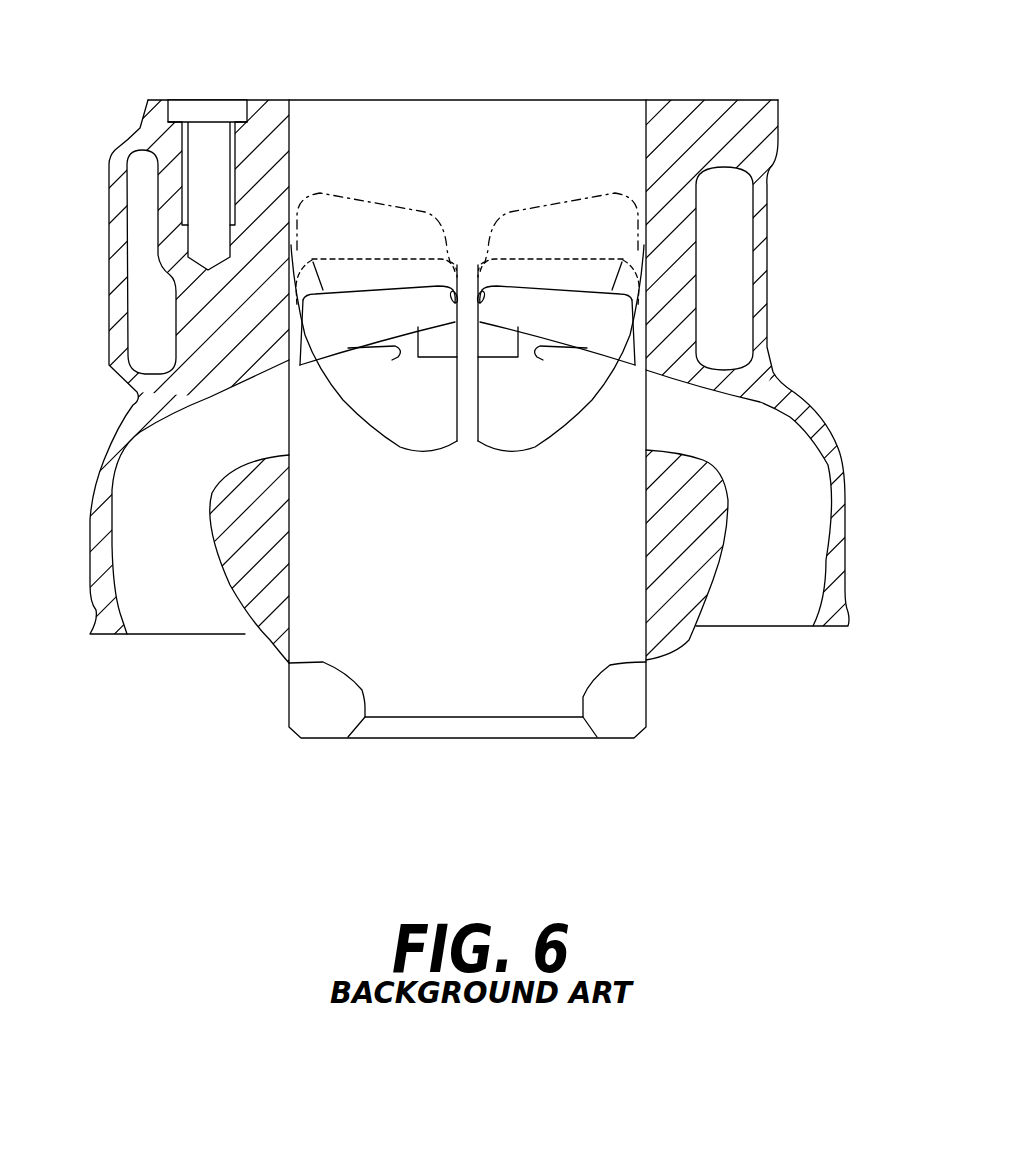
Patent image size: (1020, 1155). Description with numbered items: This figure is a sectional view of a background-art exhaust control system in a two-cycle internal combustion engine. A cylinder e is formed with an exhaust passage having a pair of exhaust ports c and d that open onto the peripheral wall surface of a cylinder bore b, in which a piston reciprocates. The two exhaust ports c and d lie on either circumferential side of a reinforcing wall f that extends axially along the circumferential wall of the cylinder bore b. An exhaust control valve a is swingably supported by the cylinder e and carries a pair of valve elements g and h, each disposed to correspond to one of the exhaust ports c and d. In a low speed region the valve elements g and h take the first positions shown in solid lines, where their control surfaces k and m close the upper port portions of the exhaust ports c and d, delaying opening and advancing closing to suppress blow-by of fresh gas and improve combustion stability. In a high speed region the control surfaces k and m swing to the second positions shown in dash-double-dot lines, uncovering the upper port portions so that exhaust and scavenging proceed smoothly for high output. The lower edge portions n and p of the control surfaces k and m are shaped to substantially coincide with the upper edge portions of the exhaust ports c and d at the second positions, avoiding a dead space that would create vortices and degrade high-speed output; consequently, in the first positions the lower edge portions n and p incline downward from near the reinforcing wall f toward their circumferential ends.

The exhaust control valve a is at (440, 375).
The cylinder bore b is at (577, 123).
The exhaust port c is at (390, 430).
The exhaust port d is at (512, 432).
The cylinder e is at (778, 120).
The reinforcing wall f is at (468, 433).
The valve element g is at (353, 357).
The valve element h is at (583, 357).
The control surface k is at (417, 303).
The control surface m is at (525, 300).
The lower edge portion n is at (417, 358).
The lower edge portion p is at (518, 358).